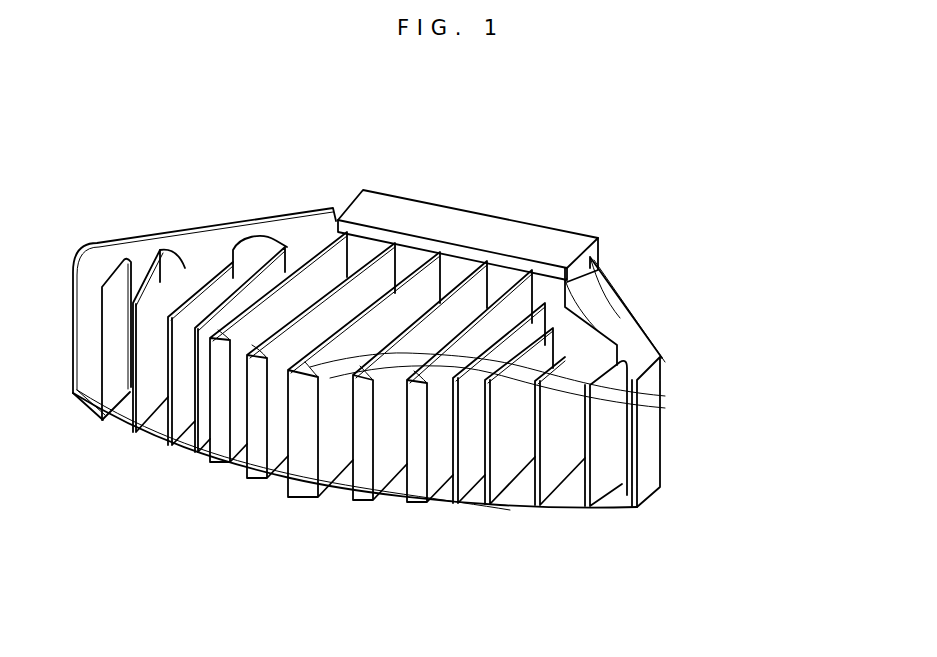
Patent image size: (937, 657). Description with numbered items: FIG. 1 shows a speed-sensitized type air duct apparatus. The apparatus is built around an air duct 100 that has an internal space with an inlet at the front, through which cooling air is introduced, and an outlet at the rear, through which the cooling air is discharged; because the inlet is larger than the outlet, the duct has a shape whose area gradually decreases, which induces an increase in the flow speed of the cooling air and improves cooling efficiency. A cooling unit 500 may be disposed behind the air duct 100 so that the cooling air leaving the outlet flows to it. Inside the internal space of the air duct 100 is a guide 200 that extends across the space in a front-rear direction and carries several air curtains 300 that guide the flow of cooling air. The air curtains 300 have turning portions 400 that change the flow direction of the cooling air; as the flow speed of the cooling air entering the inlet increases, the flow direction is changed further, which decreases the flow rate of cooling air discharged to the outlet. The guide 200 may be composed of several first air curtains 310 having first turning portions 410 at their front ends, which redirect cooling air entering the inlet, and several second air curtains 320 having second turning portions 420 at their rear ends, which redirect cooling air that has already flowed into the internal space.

The air duct 100 is at (625, 288).
The guide 200 is at (374, 240).
The air curtains 300 is at (342, 435).
The first air curtains 310 is at (220, 452).
The second air curtains 320 is at (167, 438).
The turning portions 400 is at (494, 285).
The first turning portions 410 is at (580, 402).
The second turning portions 420 is at (260, 243).
The cooling unit 500 is at (530, 237).